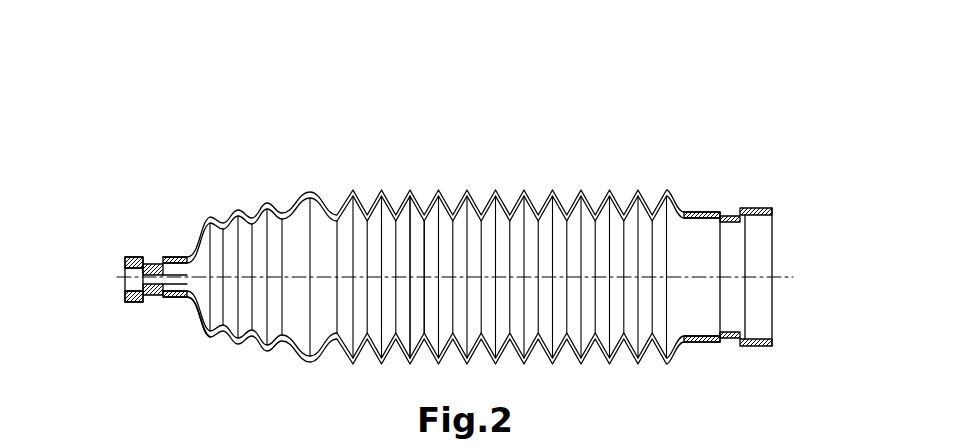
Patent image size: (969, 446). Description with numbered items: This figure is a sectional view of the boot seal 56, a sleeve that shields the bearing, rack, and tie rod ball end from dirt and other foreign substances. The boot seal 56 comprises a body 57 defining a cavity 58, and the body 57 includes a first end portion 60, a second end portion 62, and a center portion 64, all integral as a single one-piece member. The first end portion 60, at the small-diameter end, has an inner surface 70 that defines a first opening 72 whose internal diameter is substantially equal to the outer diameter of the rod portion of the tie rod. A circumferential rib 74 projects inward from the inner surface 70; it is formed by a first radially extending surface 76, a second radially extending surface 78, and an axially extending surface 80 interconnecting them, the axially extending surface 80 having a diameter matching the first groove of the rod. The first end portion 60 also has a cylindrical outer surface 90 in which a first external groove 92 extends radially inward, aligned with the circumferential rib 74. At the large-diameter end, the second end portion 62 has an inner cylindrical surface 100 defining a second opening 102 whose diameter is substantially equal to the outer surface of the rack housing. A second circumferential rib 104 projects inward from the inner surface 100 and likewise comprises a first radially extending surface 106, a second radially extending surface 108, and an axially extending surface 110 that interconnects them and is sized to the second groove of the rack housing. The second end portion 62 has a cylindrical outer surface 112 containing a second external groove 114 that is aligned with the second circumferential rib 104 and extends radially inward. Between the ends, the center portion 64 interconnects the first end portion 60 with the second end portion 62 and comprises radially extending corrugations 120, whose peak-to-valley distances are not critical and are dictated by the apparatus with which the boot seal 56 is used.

The boot seal 56 is at (441, 134).
The body 57 is at (270, 200).
The cavity 58 is at (413, 311).
The first end portion 60 is at (137, 285).
The second end portion 62 is at (773, 256).
The center portion 64 is at (449, 180).
The inner surface 70 is at (100, 265).
The first opening 72 is at (130, 288).
The circumferential rib 74 is at (152, 258).
The first radially extending surface 76 is at (128, 303).
The second radially extending surface 78 is at (240, 347).
The axially extending surface 80 is at (165, 300).
The cylindrical outer surface 90 is at (137, 257).
The first external groove 92 is at (155, 292).
The inner cylindrical surface 100 is at (781, 227).
The second opening 102 is at (760, 310).
The second circumferential rib 104 is at (733, 225).
The first radially extending surface 106 is at (705, 342).
The second radially extending surface 108 is at (760, 345).
The axially extending surface 110 is at (748, 322).
The cylindrical outer surface 112 is at (760, 210).
The second external groove 114 is at (728, 218).
The corrugations 120 is at (566, 198).